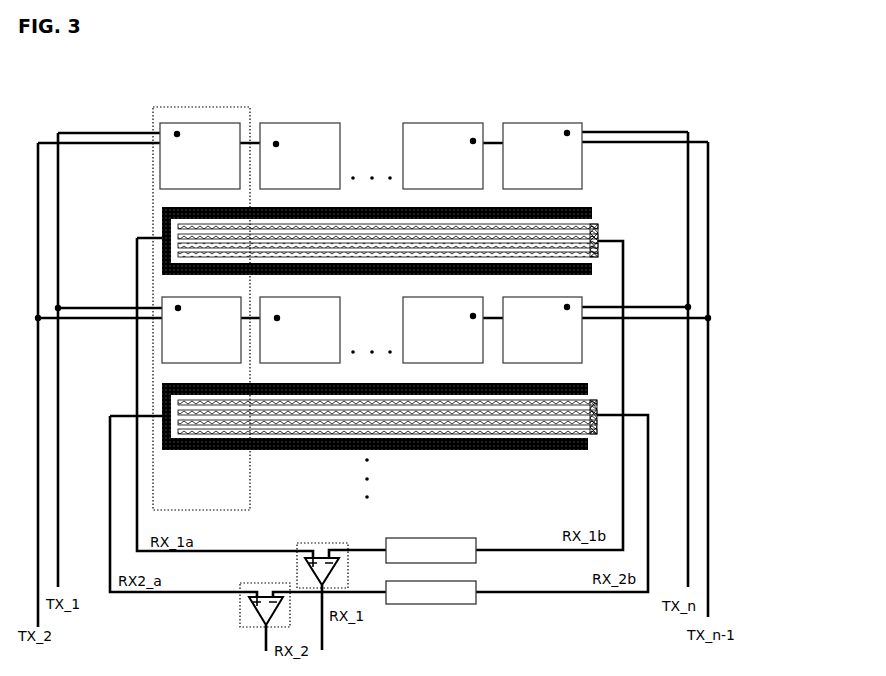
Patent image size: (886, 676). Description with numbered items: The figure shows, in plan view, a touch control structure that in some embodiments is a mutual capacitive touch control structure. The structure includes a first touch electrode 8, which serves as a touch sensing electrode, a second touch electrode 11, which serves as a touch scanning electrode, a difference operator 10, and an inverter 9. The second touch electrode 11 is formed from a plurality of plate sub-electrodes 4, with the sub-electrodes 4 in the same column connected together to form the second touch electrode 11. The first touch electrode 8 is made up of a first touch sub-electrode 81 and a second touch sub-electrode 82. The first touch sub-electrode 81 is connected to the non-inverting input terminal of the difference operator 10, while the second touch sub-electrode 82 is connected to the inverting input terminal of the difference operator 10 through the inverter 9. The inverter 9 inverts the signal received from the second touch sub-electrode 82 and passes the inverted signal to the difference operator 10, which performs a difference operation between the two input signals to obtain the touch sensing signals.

The second touch electrode 11 is at (200, 97).
The plate sub-electrode 4 is at (224, 143).
The first touch electrode 8 is at (477, 301).
The first touch sub-electrode 81 is at (593, 211).
The second touch sub-electrode 82 is at (600, 233).
The difference operator 10 is at (317, 543).
The inverter 9 is at (480, 538).